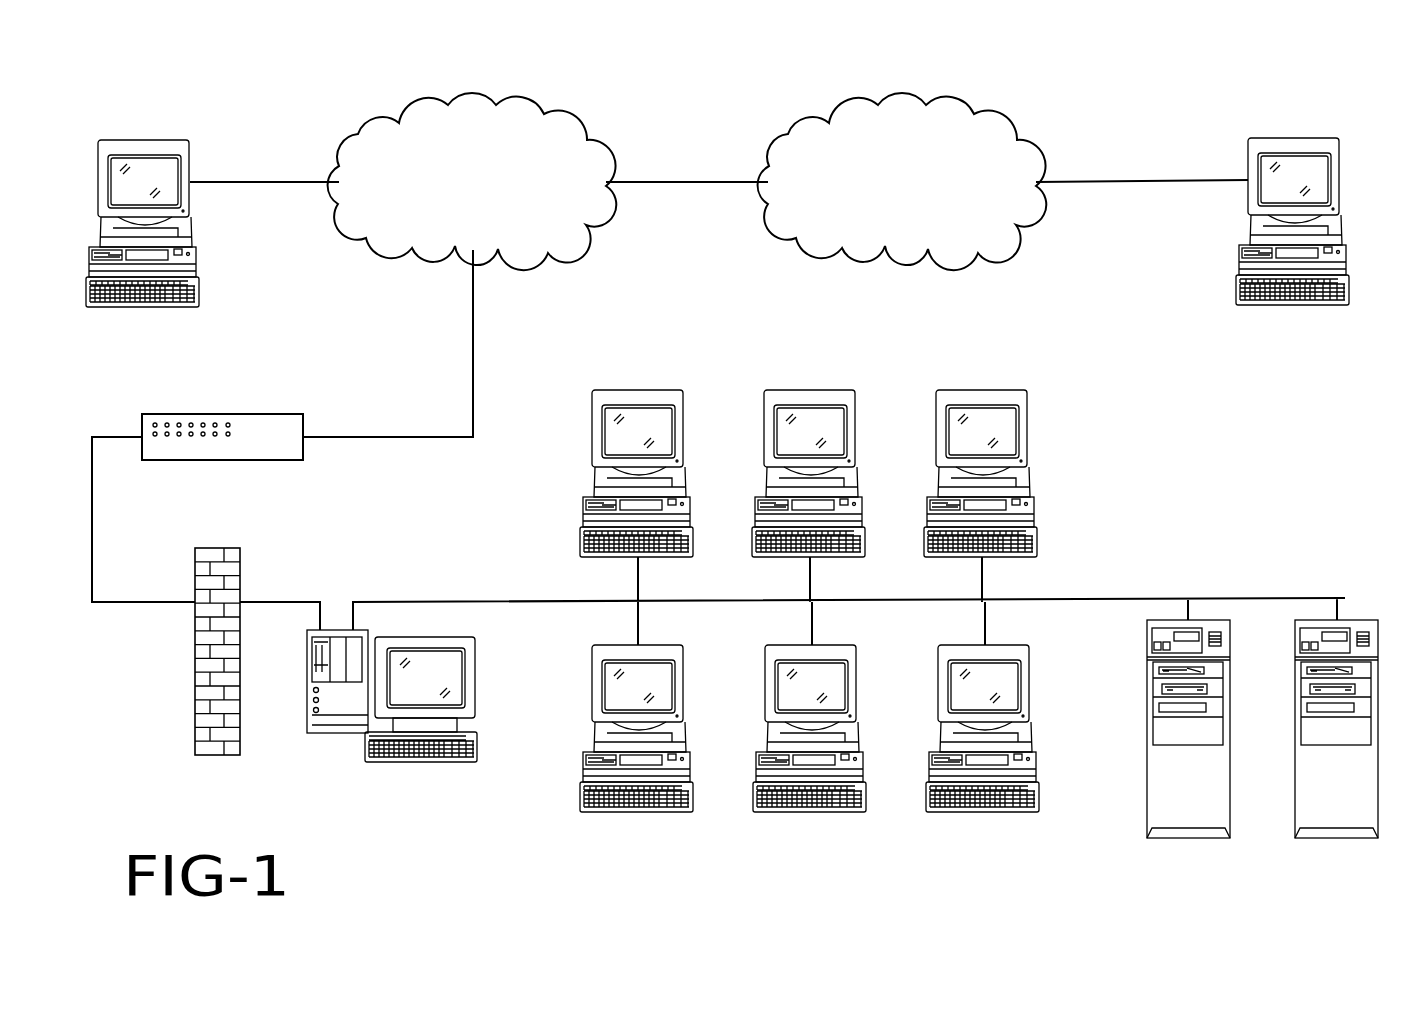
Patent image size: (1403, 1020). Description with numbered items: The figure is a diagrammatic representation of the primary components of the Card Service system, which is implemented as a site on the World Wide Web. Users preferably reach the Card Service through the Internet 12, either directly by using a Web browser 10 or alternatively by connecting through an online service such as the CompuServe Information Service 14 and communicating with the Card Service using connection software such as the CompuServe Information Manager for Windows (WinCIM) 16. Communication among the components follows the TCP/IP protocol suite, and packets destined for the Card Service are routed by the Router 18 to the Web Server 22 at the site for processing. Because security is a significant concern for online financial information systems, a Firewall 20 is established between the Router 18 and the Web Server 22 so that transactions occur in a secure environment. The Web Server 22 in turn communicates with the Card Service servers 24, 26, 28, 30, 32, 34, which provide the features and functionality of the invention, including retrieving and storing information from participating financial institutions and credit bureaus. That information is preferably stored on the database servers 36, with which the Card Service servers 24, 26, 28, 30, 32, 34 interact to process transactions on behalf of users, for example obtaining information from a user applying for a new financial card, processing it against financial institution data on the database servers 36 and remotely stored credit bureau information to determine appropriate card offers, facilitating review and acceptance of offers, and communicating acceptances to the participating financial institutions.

The Web browser 10 is at (152, 140).
The Internet 12 is at (490, 199).
The CompuServe Information Service 14 is at (924, 199).
The CompuServe Information Manager for Windows (WinCIM) 16 is at (1285, 138).
The Router 18 is at (207, 414).
The Firewall 20 is at (195, 645).
The Web Server 22 is at (405, 762).
The Card Service server 24 is at (637, 390).
The Card Service server 26 is at (809, 390).
The Card Service server 28 is at (981, 390).
The Card Service server 30 is at (638, 812).
The Card Service server 32 is at (812, 812).
The Card Service server 34 is at (985, 812).
The database servers 36 is at (1392, 853).